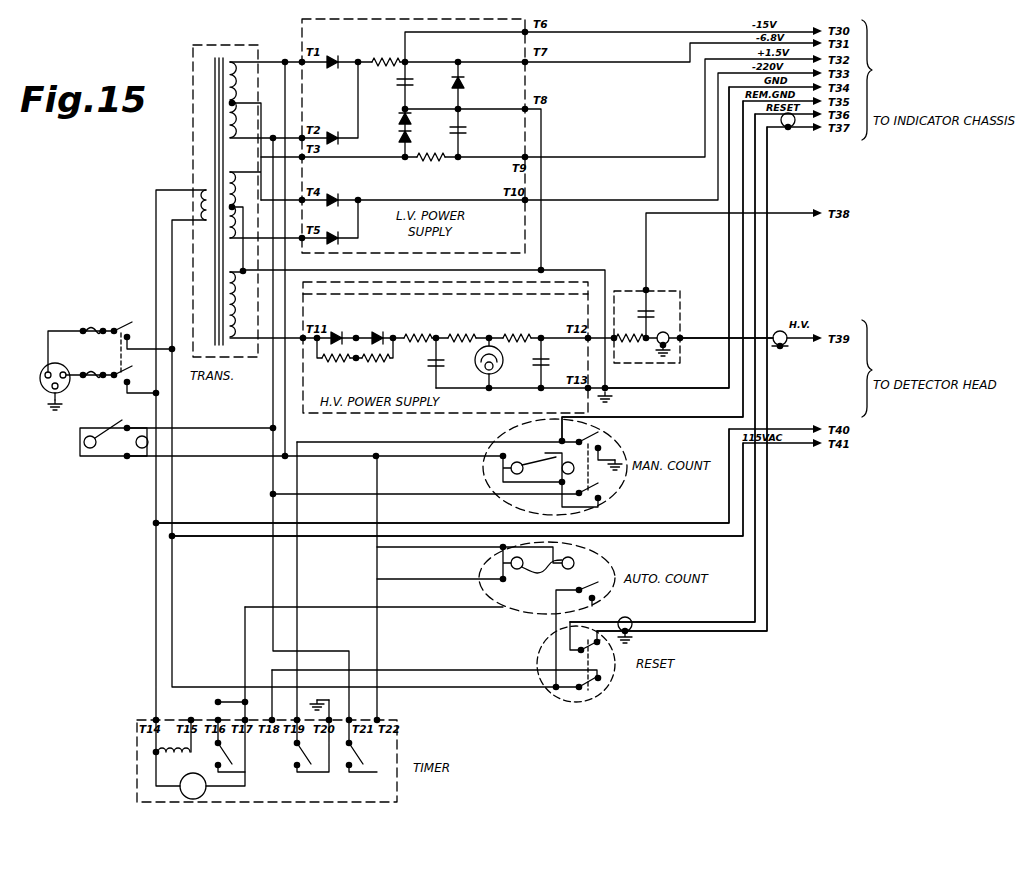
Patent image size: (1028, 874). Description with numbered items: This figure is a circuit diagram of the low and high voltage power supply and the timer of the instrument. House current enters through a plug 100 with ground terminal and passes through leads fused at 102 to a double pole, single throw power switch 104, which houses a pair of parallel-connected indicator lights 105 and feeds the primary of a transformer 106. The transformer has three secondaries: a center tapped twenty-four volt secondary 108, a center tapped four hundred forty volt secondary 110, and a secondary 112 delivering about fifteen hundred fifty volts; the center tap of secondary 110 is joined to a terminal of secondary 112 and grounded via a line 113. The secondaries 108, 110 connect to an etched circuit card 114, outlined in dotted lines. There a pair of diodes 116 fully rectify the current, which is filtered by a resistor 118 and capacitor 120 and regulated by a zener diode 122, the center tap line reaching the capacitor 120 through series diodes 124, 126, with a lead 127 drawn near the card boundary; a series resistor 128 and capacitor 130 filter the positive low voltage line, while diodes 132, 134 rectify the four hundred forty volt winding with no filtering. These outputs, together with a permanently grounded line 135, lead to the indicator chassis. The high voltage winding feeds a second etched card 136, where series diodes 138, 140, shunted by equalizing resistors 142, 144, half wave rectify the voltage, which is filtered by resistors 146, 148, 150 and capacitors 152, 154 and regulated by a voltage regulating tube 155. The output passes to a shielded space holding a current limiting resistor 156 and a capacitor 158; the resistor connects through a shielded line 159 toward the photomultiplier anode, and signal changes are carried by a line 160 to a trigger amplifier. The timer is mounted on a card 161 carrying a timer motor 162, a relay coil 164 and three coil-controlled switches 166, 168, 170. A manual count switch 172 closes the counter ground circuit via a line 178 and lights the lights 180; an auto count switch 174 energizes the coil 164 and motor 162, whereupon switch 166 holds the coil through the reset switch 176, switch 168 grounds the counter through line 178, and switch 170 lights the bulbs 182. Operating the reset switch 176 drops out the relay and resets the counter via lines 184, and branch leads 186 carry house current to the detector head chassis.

The plug 100 is at (42, 376).
The fused leads 102 is at (110, 325).
The power switch 104 is at (148, 307).
The low voltage indicator lights 105 is at (124, 417).
The transformer 106 is at (206, 180).
The secondary 108 is at (238, 88).
The secondary 110 is at (235, 182).
The secondary 112 is at (235, 292).
The line 113 is at (308, 270).
The etched circuit card 114 is at (527, 84).
The diodes 116 is at (352, 44).
The resistor 118 is at (391, 56).
The capacitor 120 is at (400, 84).
The zener diode 122 is at (454, 86).
The diode 124 is at (398, 133).
The diode 126 is at (398, 114).
The lead 127 is at (506, 106).
The series resistor 128 is at (432, 159).
The capacitor 130 is at (466, 134).
The diode 132 is at (338, 198).
The diode 134 is at (348, 222).
The grounded line 135 is at (718, 242).
The etched card 136 is at (326, 415).
The diode 138 is at (355, 322).
The diode 140 is at (393, 322).
The resistor 142 is at (328, 362).
The resistor 144 is at (370, 362).
The resistor 146 is at (428, 318).
The resistor 148 is at (475, 318).
The resistor 150 is at (529, 318).
The capacitor 152 is at (428, 366).
The capacitor 154 is at (545, 360).
The voltage regulating tube 155 is at (474, 370).
The current limiting resistor 156 is at (620, 342).
The capacitor 158 is at (670, 302).
The shielded line 159 is at (710, 322).
The line 160 is at (642, 211).
The timer card 161 is at (392, 726).
The timer motor 162 is at (182, 802).
The relay coil 164 is at (148, 756).
The switch 166 is at (214, 758).
The switch 168 is at (292, 768).
The switch 170 is at (346, 766).
The manual count switch 172 is at (606, 446).
The auto count switch 174 is at (598, 576).
The reset switch 176 is at (600, 672).
The line 178 is at (554, 439).
The lights 180 is at (544, 460).
The bulbs 182 is at (534, 580).
The lines 184 is at (716, 604).
The branch leads 186 is at (680, 512).